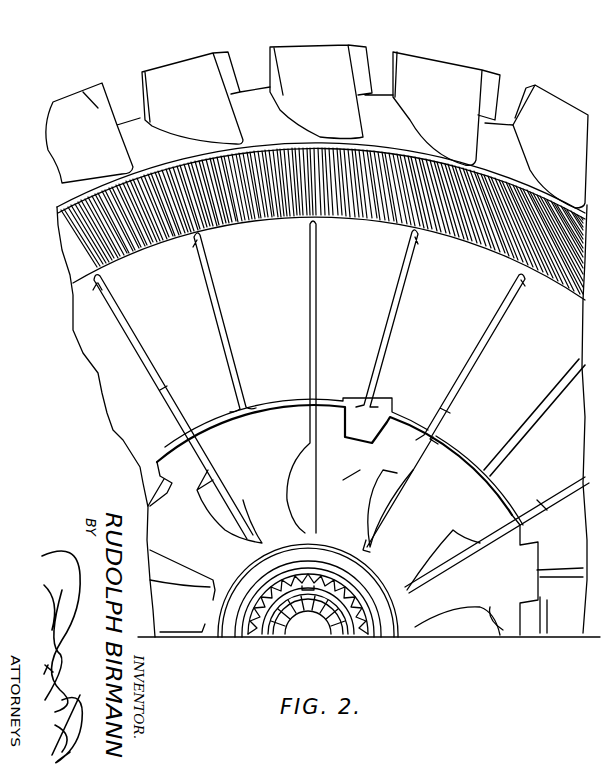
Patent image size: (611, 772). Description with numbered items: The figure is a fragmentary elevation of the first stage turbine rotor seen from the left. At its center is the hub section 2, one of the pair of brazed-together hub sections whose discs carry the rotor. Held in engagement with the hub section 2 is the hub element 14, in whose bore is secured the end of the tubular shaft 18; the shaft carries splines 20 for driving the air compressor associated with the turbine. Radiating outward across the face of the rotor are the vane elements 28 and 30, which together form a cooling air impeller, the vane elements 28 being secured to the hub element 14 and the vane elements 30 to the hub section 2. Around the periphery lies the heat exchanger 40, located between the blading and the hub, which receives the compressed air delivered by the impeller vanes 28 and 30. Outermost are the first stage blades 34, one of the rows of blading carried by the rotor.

The hub section 2 is at (504, 412).
The hub element 14 is at (347, 496).
The tubular shaft 18 is at (328, 553).
The splines 20 is at (347, 593).
The vane elements 28 is at (460, 623).
The vane elements 30 is at (522, 437).
The blades 34 is at (459, 71).
The heat exchanger 40 is at (68, 245).